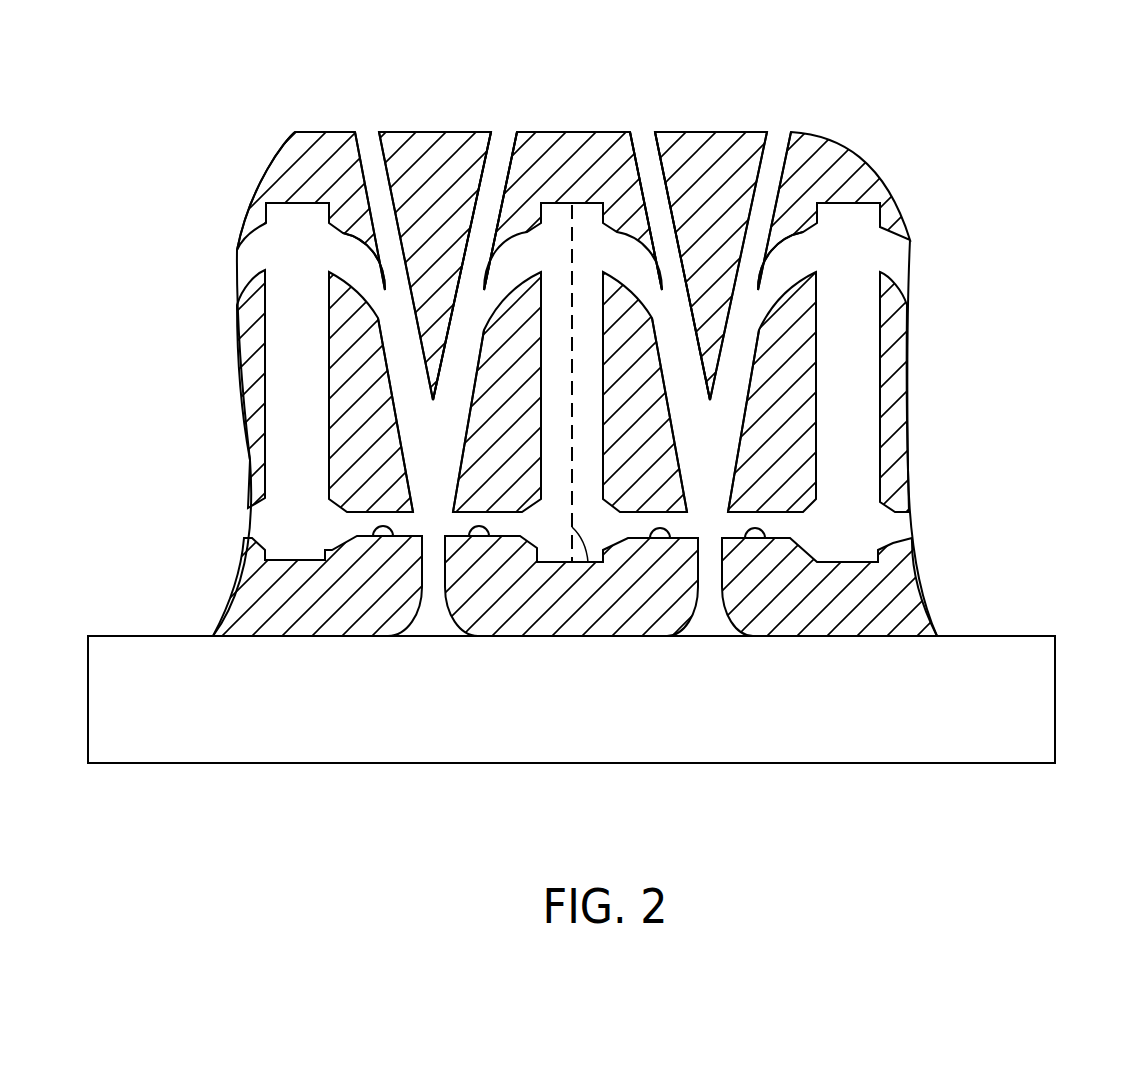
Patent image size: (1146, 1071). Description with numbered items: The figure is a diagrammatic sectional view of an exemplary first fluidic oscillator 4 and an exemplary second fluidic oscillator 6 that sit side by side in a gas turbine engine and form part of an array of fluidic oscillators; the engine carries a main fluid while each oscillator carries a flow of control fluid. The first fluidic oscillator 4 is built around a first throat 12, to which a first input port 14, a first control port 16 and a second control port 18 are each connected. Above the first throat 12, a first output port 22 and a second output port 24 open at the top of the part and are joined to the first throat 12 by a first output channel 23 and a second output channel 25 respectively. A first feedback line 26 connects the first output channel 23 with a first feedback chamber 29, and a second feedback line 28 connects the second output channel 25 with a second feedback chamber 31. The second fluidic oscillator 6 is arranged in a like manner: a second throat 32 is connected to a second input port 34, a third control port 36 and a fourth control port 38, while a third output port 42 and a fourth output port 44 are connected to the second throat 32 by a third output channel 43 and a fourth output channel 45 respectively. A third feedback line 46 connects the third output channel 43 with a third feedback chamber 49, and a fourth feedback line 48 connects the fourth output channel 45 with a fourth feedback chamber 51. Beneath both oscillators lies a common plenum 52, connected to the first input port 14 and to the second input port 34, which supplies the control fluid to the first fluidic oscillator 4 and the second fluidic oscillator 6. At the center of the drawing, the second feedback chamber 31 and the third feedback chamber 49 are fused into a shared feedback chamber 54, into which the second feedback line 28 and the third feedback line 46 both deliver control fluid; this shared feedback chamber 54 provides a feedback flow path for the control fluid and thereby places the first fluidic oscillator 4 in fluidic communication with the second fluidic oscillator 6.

The first fluidic oscillator 4 is at (371, 378).
The second fluidic oscillator 6 is at (796, 378).
The first throat 12 is at (432, 500).
The first input port 14 is at (433, 627).
The first control port 16 is at (372, 536).
The second control port 18 is at (487, 536).
The first output port 22 is at (368, 122).
The first output channel 23 is at (387, 252).
The second output port 24 is at (505, 122).
The second output channel 25 is at (478, 222).
The first feedback line 26 is at (335, 276).
The second feedback line 28 is at (502, 296).
The first feedback chamber 29 is at (296, 465).
The second feedback chamber 31 is at (550, 461).
The second throat 32 is at (708, 503).
The second input port 34 is at (709, 627).
The third control port 36 is at (650, 538).
The fourth control port 38 is at (765, 538).
The third output port 42 is at (642, 122).
The third output channel 43 is at (653, 220).
The fourth output port 44 is at (778, 122).
The fourth output channel 45 is at (768, 168).
The third feedback line 46 is at (640, 294).
The fourth feedback line 48 is at (795, 296).
The third feedback chamber 49 is at (598, 462).
The fourth feedback chamber 51 is at (850, 463).
The common plenum 52 is at (1055, 700).
The shared feedback chamber 54 is at (588, 562).